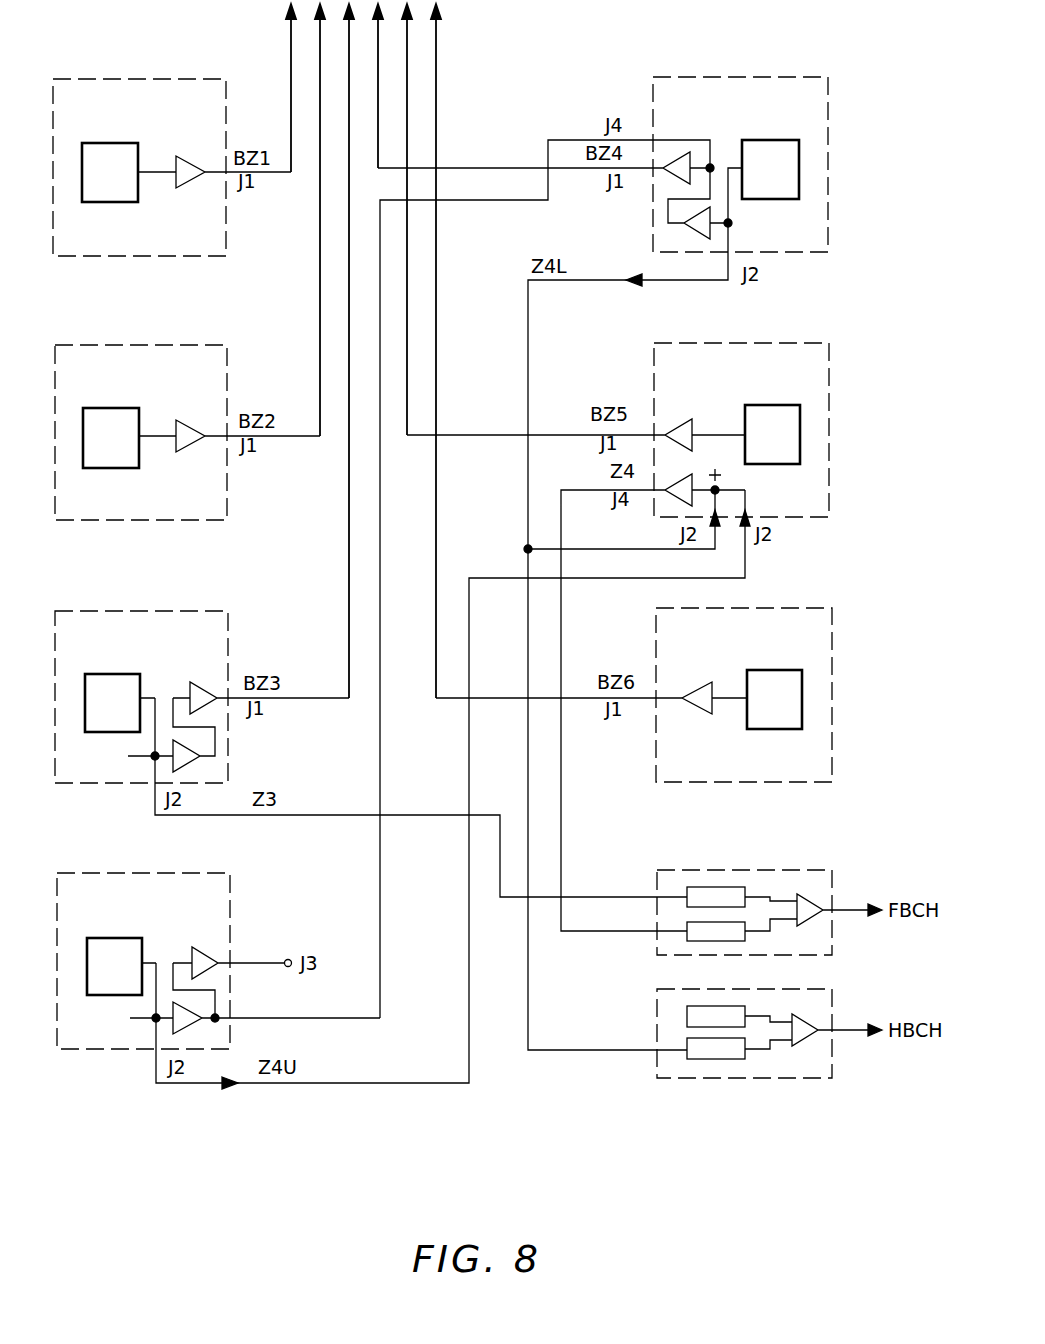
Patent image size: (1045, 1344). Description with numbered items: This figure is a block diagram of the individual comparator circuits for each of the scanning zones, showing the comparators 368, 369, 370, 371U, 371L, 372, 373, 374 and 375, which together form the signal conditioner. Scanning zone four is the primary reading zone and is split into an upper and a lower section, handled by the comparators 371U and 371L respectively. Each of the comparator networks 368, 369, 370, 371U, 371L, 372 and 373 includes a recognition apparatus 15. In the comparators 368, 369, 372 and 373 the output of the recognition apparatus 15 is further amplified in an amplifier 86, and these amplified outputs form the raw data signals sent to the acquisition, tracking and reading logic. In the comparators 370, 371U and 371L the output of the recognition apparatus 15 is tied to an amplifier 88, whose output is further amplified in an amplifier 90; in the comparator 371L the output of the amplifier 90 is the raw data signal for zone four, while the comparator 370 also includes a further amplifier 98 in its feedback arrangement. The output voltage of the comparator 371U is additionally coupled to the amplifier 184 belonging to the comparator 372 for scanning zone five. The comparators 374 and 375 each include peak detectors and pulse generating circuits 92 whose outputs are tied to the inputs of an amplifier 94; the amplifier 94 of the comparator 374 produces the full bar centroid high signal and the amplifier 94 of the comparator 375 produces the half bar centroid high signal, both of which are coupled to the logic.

The recognition apparatus 15 is at (118, 143).
The amplifier 86 is at (191, 155).
The amplifier 88 is at (190, 1030).
The amplifier 90 is at (196, 684).
The peak detectors and pulse generating circuits 92 is at (717, 887).
The amplifier 94 is at (815, 918).
The inverting amplifier 98 is at (187, 767).
The amplifier 184 is at (675, 503).
The comparator 368 is at (180, 78).
The comparator 369 is at (188, 344).
The comparator 370 is at (187, 610).
The comparator 371U is at (177, 872).
The comparator 371L is at (793, 77).
The comparator 372 is at (785, 342).
The comparator 373 is at (785, 608).
The comparator 374 is at (763, 870).
The comparator 375 is at (820, 989).